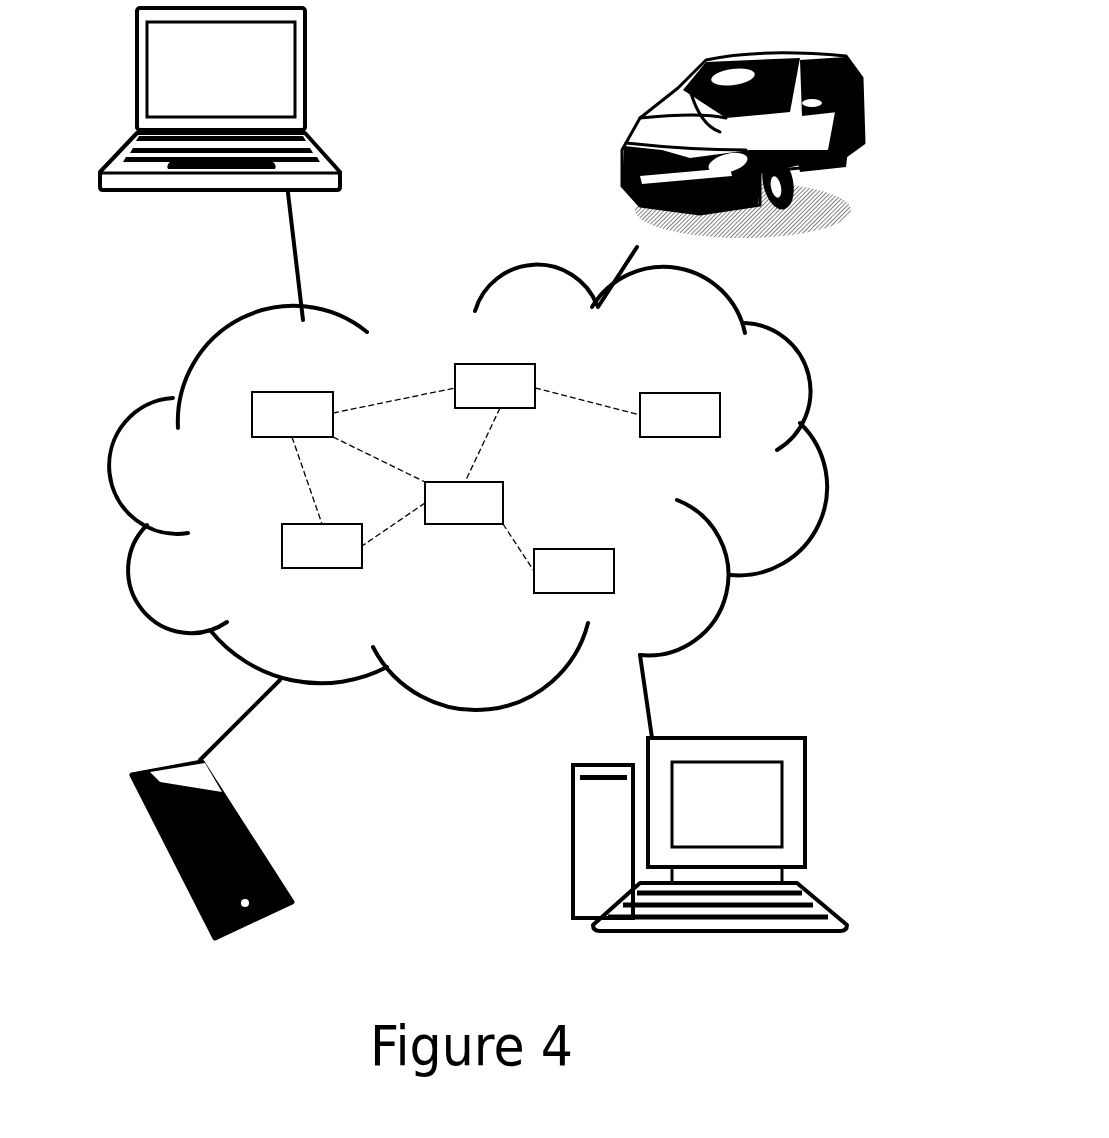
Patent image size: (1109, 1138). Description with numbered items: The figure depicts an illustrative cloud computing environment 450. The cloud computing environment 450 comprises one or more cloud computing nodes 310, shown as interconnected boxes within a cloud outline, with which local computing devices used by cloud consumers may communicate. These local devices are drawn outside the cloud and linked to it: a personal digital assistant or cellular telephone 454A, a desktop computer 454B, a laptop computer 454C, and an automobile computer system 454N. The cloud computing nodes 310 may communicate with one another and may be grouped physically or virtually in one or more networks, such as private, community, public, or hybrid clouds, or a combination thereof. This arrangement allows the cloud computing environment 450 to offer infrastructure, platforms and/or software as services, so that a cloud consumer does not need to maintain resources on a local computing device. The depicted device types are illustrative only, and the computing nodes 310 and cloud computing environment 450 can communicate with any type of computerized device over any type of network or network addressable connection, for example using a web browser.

The cloud computing node 310 is at (486, 478).
The cloud computing environment 450 is at (173, 399).
The personal digital assistant (PDA) or cellular telephone 454A is at (130, 783).
The desktop computer 454B is at (573, 886).
The laptop computer 454C is at (136, 87).
The automobile computer system 454N is at (627, 157).